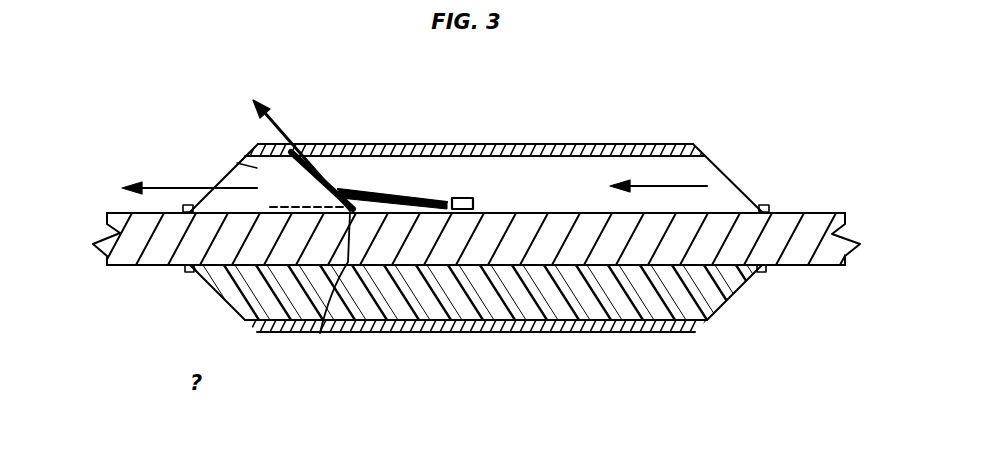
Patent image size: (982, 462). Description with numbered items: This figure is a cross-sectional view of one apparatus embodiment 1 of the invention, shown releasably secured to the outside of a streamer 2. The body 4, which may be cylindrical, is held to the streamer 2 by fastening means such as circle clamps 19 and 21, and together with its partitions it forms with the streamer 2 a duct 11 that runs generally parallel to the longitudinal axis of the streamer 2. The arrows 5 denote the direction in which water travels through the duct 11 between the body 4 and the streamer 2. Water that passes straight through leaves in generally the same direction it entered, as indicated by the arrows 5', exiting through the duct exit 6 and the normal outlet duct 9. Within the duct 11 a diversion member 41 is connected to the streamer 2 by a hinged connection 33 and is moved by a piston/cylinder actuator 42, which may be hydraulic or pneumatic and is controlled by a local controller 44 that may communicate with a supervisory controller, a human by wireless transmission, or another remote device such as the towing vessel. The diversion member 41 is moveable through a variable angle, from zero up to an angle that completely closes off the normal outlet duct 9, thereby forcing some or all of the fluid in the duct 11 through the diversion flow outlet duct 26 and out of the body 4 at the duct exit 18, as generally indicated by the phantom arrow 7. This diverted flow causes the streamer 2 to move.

The apparatus embodiment 1 is at (736, 116).
The streamer 2 is at (812, 212).
The body 4 is at (527, 150).
The arrows denoting direction of water travel 5 is at (658, 140).
The arrows indicating non-diverted fluid flow 5' is at (189, 160).
The duct exit 6 is at (257, 168).
The phantom arrow indicating diverted fluid flow 7 is at (280, 122).
The normal outlet duct 9 is at (240, 180).
The duct 11 is at (573, 167).
The duct exit 18 is at (280, 207).
The circle clamp 19 is at (187, 275).
The circle clamp 21 is at (764, 204).
The diversion flow outlet duct 26 is at (327, 163).
The hinged connection 33 is at (320, 333).
The diversion member 41 is at (397, 197).
The piston/cylinder actuator 42 is at (428, 203).
The local controller 44 is at (463, 198).